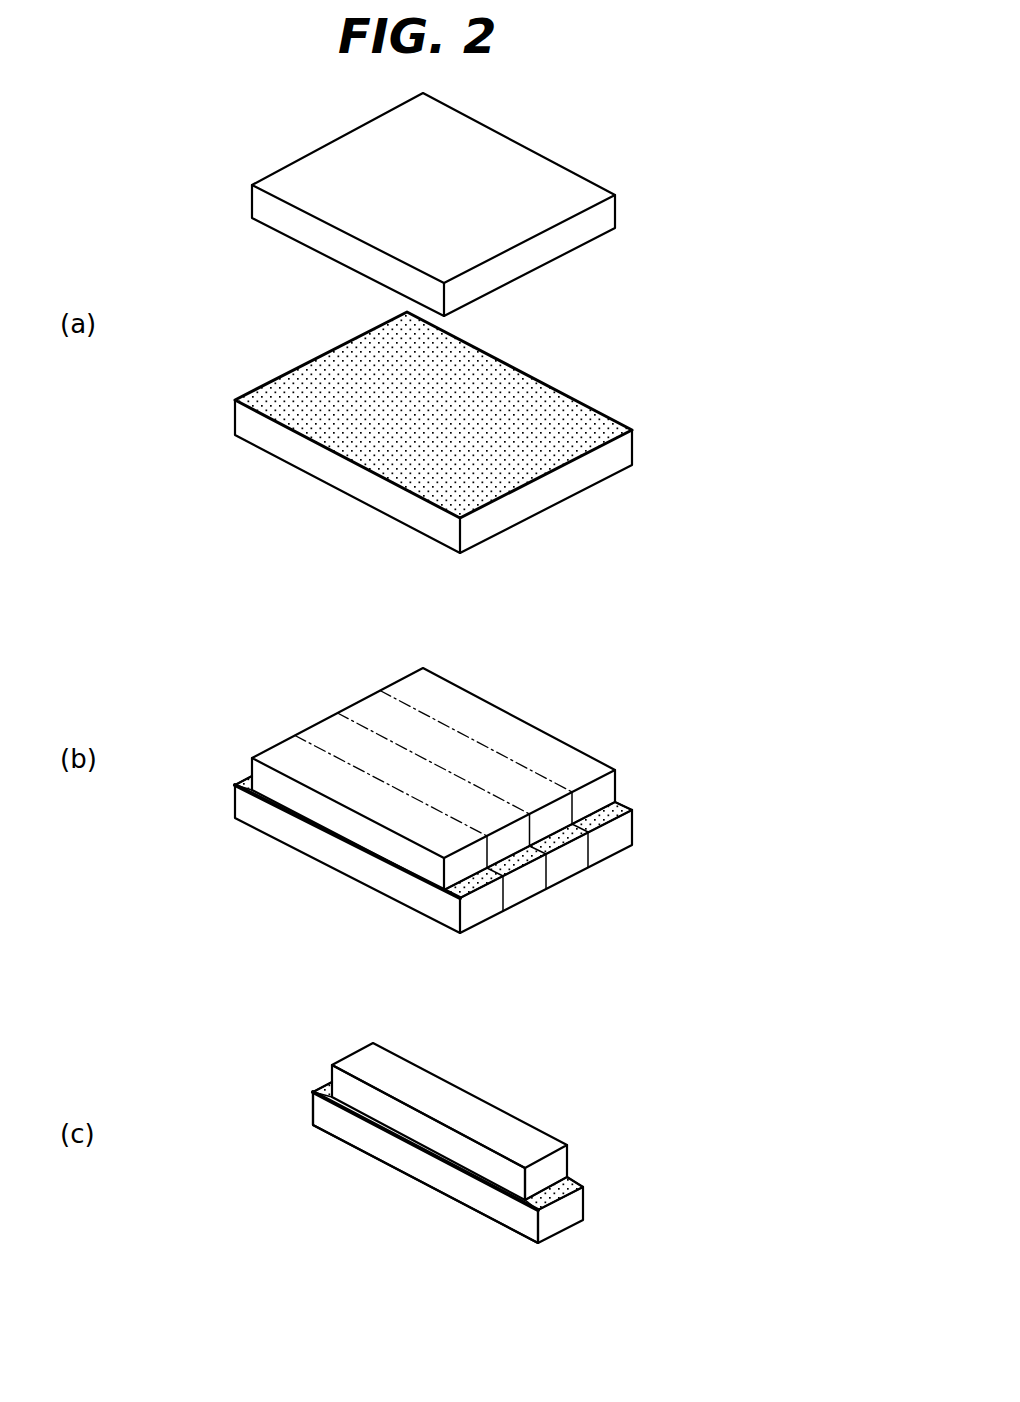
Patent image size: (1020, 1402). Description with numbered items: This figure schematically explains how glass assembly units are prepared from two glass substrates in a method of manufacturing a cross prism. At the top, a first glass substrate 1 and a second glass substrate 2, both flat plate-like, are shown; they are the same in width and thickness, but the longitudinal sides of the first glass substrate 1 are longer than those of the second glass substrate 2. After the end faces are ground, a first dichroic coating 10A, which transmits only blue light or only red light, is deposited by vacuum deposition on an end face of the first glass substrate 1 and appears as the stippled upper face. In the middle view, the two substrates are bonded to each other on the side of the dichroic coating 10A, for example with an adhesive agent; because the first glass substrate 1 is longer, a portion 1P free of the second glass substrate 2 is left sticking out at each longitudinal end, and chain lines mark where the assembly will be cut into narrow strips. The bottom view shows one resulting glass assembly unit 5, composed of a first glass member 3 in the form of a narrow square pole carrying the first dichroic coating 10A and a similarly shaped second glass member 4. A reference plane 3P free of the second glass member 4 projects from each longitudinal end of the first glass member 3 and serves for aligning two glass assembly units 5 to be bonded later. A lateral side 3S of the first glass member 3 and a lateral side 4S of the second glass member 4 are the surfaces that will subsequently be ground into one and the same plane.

The first glass substrate 1 is at (265, 440).
The second glass substrate 2 is at (522, 168).
The first dichroic coating 10A is at (530, 405).
The portion free of the second glass substrate 1P is at (248, 783).
The first glass member 3 is at (473, 1198).
The lateral side of the first glass member 3S is at (390, 1152).
The reference plane 3P is at (327, 1088).
The second glass member 4 is at (547, 1128).
The lateral side of the second glass member 4S is at (345, 1095).
The glass assembly unit 5 is at (418, 1134).